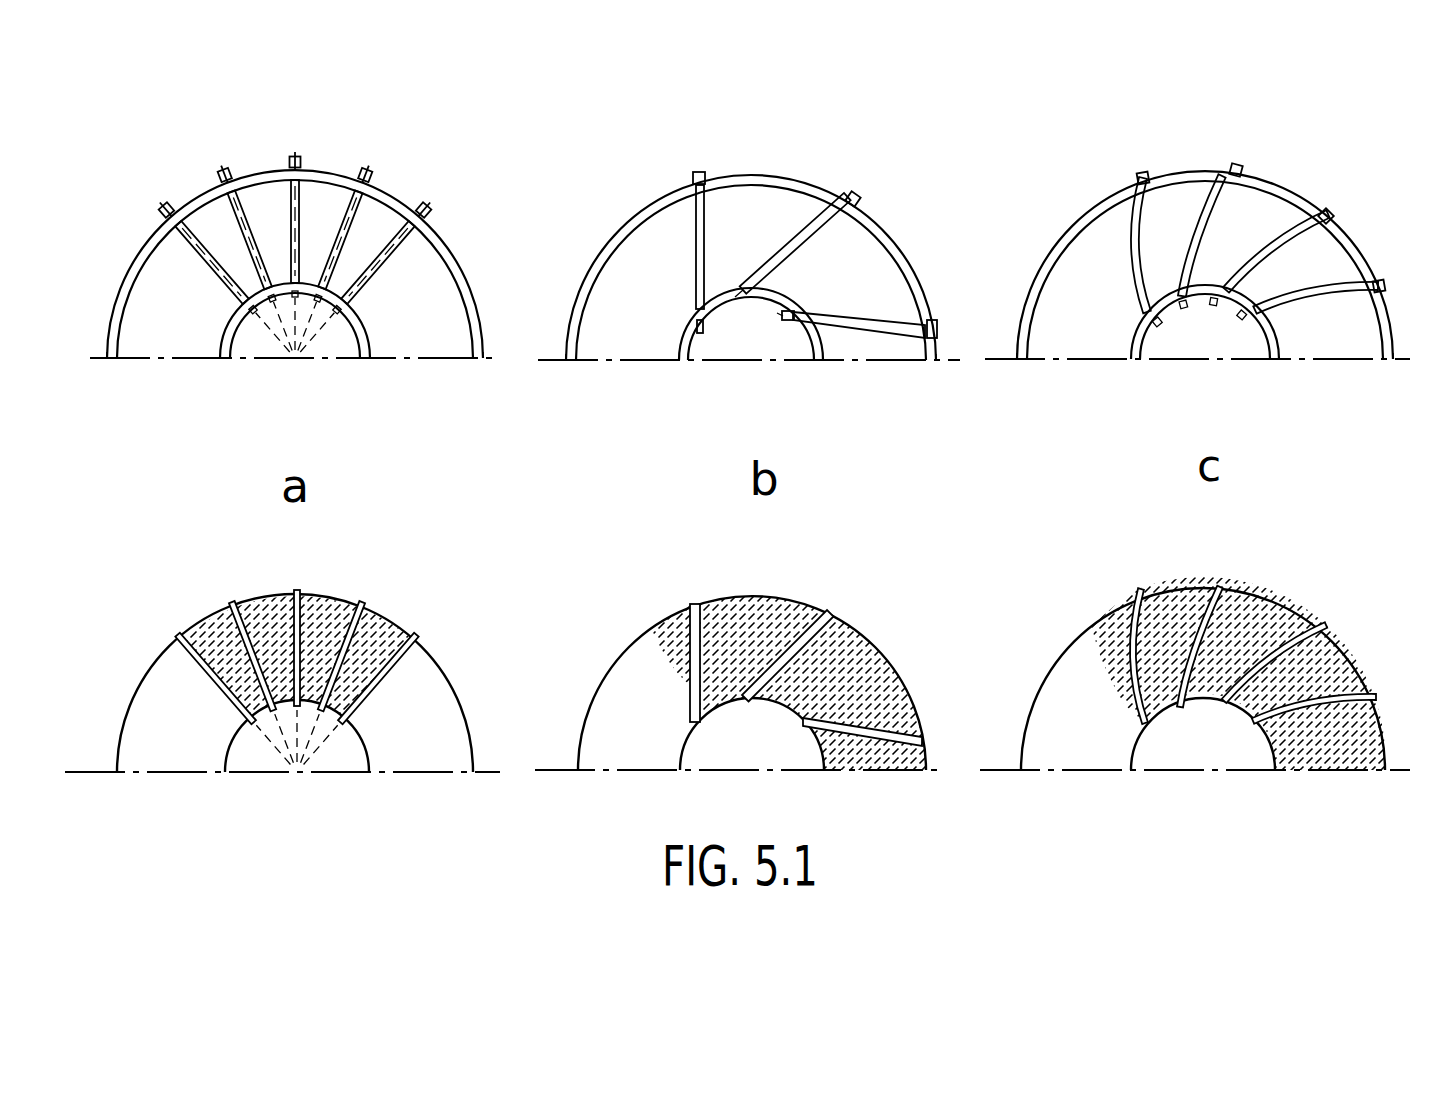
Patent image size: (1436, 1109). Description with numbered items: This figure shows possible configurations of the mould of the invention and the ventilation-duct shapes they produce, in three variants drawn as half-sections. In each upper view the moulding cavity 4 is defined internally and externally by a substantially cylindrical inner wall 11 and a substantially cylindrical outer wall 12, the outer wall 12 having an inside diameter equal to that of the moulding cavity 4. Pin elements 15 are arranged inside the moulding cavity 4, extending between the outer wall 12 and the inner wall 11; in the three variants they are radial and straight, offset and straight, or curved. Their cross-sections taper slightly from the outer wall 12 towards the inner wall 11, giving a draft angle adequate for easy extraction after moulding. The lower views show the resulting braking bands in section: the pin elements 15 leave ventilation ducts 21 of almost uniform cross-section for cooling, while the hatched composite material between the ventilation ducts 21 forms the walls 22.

The moulding cavity 4 is at (143, 288).
The outer wall 12 is at (438, 248).
The inner wall 11 is at (357, 337).
The pin elements 15 is at (283, 195).
The ventilation ducts 21 is at (188, 642).
The walls 22 is at (322, 608).